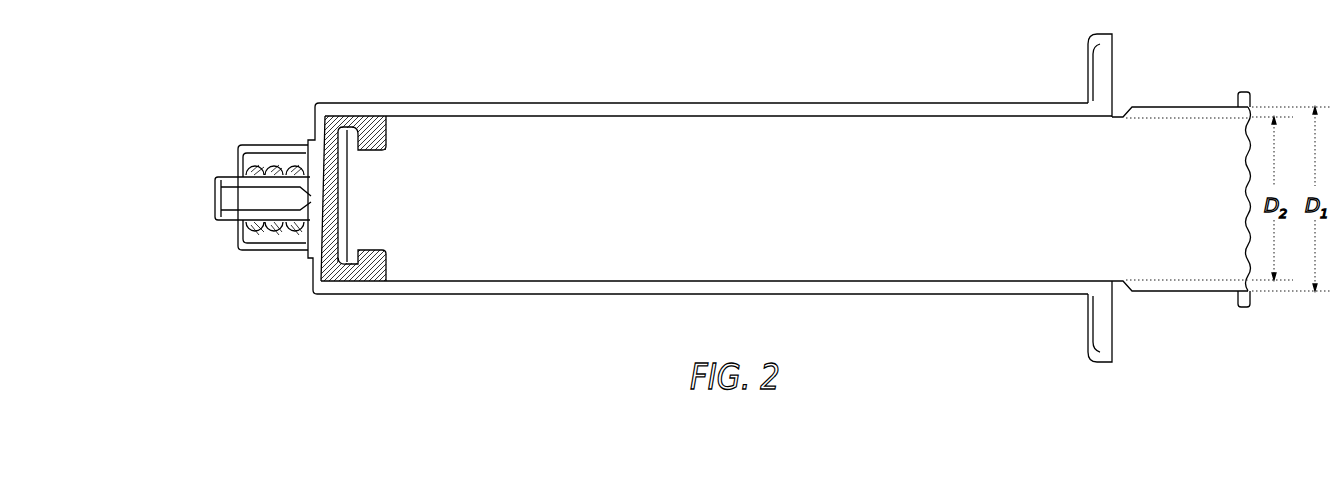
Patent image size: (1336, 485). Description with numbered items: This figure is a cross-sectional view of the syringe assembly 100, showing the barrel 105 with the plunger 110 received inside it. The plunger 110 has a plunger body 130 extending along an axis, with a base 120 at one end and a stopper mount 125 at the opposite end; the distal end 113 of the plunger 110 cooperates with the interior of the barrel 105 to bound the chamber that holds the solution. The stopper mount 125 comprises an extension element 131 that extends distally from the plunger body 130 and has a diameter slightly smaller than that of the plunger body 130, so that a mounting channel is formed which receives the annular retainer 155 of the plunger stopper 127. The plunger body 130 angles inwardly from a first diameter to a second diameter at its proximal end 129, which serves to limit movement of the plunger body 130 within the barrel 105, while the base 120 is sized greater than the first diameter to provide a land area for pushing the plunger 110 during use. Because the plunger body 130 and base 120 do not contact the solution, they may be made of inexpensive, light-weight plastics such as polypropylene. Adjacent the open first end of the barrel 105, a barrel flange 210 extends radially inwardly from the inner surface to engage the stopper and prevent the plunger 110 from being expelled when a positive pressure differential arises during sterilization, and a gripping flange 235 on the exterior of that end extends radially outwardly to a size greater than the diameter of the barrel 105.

The syringe assembly 100 is at (882, 79).
The barrel 105 is at (695, 109).
The plunger 110 is at (497, 137).
The distal end of the plunger 113 is at (300, 152).
The base 120 is at (1246, 91).
The stopper mount 125 is at (335, 244).
The plunger stopper 127 is at (302, 200).
The proximal end of the plunger body 129 is at (1161, 89).
The plunger body 130 is at (743, 205).
The extension element 131 is at (352, 127).
The annular retainer 155 is at (370, 267).
The barrel flange 210 is at (1082, 101).
The gripping flange 235 is at (1108, 33).